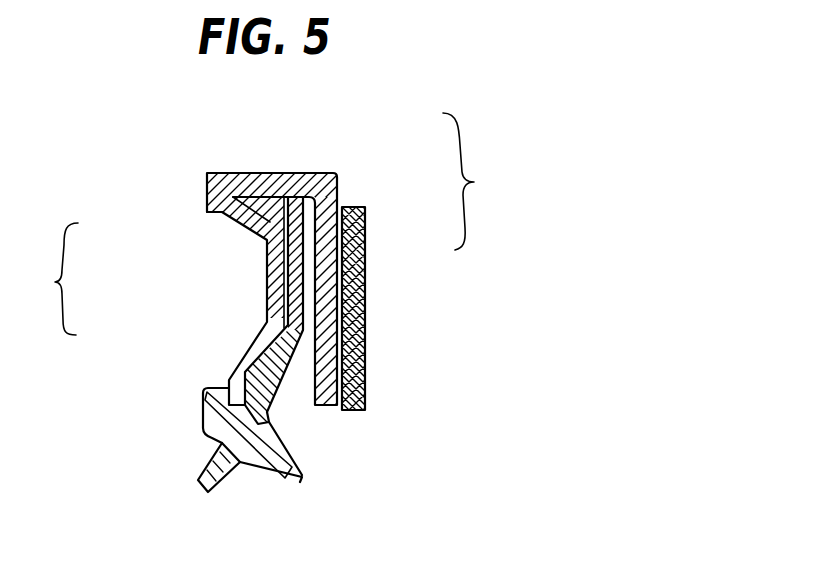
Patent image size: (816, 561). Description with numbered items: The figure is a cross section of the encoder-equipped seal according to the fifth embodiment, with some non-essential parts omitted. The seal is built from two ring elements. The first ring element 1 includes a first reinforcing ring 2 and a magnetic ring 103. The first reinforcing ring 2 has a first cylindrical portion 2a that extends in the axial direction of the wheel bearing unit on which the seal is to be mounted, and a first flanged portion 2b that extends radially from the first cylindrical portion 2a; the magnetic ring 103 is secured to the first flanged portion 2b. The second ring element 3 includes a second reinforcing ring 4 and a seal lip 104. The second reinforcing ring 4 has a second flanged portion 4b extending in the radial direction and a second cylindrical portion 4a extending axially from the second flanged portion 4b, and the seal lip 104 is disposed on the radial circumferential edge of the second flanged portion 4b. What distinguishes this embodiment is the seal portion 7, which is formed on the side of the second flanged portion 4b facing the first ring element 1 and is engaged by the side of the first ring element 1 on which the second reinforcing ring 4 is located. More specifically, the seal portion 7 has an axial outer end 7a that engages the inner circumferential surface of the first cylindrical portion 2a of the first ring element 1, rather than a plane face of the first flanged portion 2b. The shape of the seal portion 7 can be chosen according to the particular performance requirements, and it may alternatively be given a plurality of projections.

The first ring element 1 is at (382, 424).
The first reinforcing ring 2 is at (336, 259).
The first cylindrical portion 2a is at (325, 175).
The first flanged portion 2b is at (352, 258).
The second ring element 3 is at (190, 428).
The second reinforcing ring 4 is at (225, 310).
The second cylindrical portion 4a is at (262, 213).
The second flanged portion 4b is at (270, 272).
The seal portion 7 is at (268, 307).
The axial outer end 7a is at (248, 173).
The magnetic ring 103 is at (344, 313).
The seal lip 104 is at (233, 468).